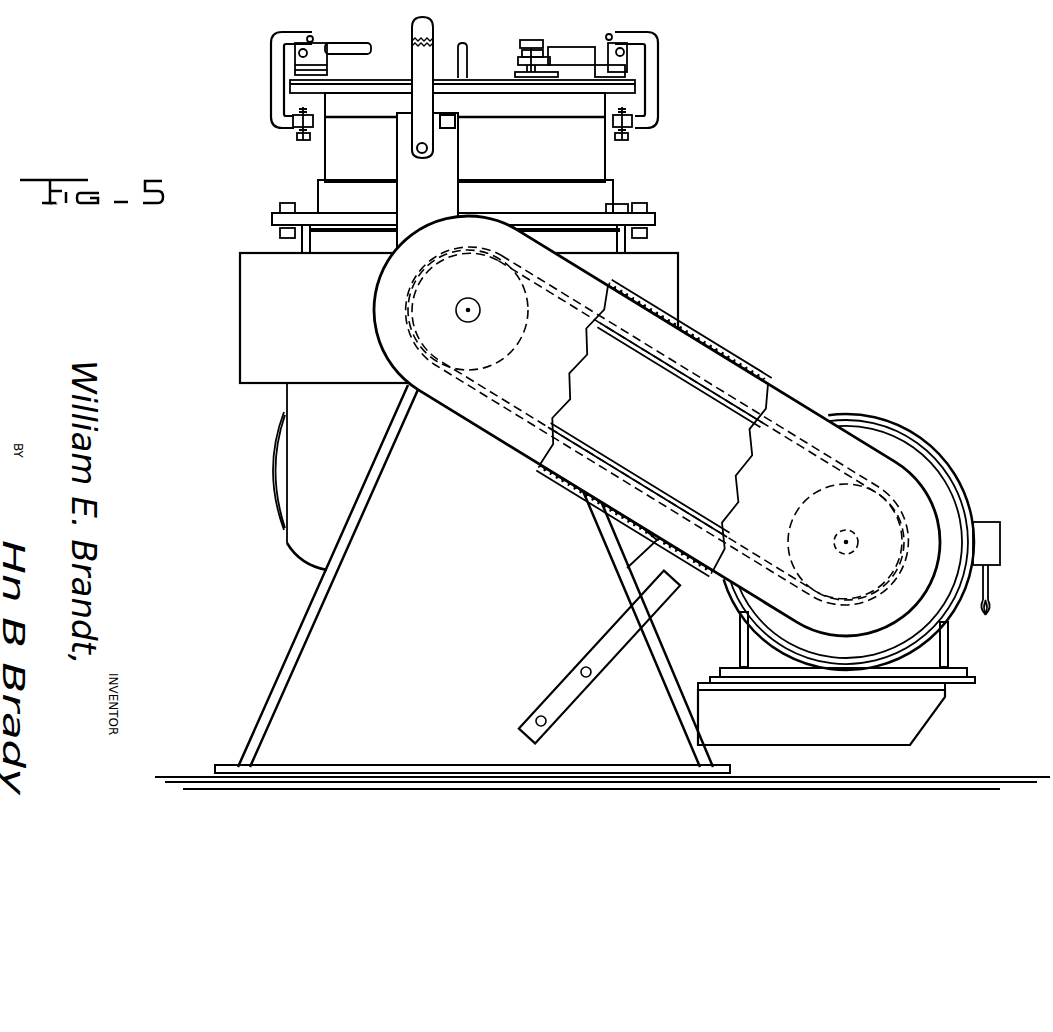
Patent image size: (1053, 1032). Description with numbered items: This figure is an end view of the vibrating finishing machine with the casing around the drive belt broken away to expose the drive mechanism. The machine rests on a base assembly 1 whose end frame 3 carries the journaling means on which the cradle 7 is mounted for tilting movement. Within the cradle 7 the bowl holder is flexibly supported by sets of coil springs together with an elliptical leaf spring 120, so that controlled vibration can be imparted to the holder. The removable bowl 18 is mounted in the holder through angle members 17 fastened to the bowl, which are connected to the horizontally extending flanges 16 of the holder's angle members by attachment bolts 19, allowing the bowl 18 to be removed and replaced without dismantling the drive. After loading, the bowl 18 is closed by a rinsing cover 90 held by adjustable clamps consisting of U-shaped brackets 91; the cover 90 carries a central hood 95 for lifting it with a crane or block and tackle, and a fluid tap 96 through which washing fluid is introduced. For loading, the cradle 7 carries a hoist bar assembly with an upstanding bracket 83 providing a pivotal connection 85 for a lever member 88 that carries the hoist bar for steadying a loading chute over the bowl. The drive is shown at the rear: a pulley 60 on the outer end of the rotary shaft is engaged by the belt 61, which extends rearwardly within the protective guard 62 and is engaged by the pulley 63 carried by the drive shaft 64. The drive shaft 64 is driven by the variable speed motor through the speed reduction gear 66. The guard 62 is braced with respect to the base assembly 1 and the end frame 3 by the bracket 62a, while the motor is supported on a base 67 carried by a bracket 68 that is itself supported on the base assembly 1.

The base assembly 1 is at (378, 737).
The end frame 3 is at (343, 550).
The cradle 7 is at (266, 313).
The horizontally extending flanges 16 is at (652, 228).
The angle members 17 is at (620, 214).
The removable bowl 18 is at (590, 160).
The attachment bolts 19 is at (288, 203).
The pulley 60 is at (416, 316).
The belt 61 is at (647, 352).
The protective guard 62 is at (726, 366).
The bracket 62a is at (680, 573).
The pulley 63 is at (810, 530).
The drive shaft 64 is at (847, 548).
The speed reduction gear 66 is at (948, 470).
The base 67 is at (910, 680).
The bracket 68 is at (883, 727).
The upstanding bracket 83 is at (445, 206).
The pivotal connection 85 is at (436, 150).
The lever member 88 is at (420, 107).
The rinsing cover 90 is at (380, 78).
The U-shaped bracket 91 is at (276, 92).
The central hood 95 is at (466, 66).
The fluid tap 96 is at (541, 44).
The elliptical leaf spring 120 is at (268, 470).